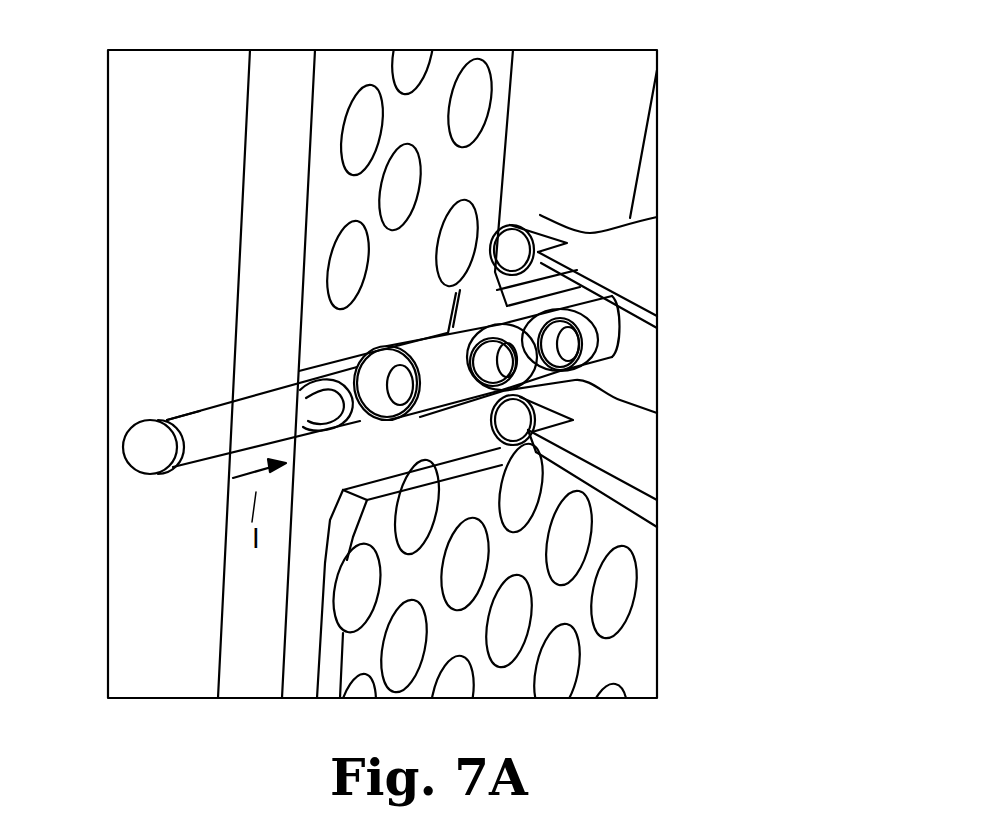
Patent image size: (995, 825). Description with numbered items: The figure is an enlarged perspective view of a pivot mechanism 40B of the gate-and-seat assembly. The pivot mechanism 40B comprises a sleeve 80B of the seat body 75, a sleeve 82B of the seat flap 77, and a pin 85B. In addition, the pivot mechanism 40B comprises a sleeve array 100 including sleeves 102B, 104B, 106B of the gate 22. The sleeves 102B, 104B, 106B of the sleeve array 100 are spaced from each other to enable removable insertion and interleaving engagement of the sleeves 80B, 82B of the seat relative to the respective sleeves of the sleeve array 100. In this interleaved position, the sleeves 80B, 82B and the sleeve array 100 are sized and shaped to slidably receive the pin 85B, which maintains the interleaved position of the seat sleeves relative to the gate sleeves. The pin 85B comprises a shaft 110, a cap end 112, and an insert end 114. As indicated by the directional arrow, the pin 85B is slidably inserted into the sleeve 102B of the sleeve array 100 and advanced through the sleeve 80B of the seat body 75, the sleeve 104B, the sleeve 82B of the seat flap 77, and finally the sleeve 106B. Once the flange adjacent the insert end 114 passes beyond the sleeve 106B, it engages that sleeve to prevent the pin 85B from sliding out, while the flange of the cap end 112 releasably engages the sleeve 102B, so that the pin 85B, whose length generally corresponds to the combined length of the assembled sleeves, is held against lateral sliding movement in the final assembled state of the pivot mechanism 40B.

The pivot mechanism 40B is at (594, 103).
The gate 22 is at (236, 231).
The seat flap 77 is at (592, 280).
The sleeve 82B is at (540, 221).
The sleeve 80B is at (533, 383).
The seat body 75 is at (623, 448).
The sleeve array 100 is at (476, 379).
The sleeve 102B is at (425, 419).
The sleeve 104B is at (582, 308).
The sleeve 106B is at (597, 333).
The shaft 110 is at (195, 443).
The cap end 112 is at (138, 456).
The pin 85B is at (192, 413).
The insert end 114 is at (297, 403).